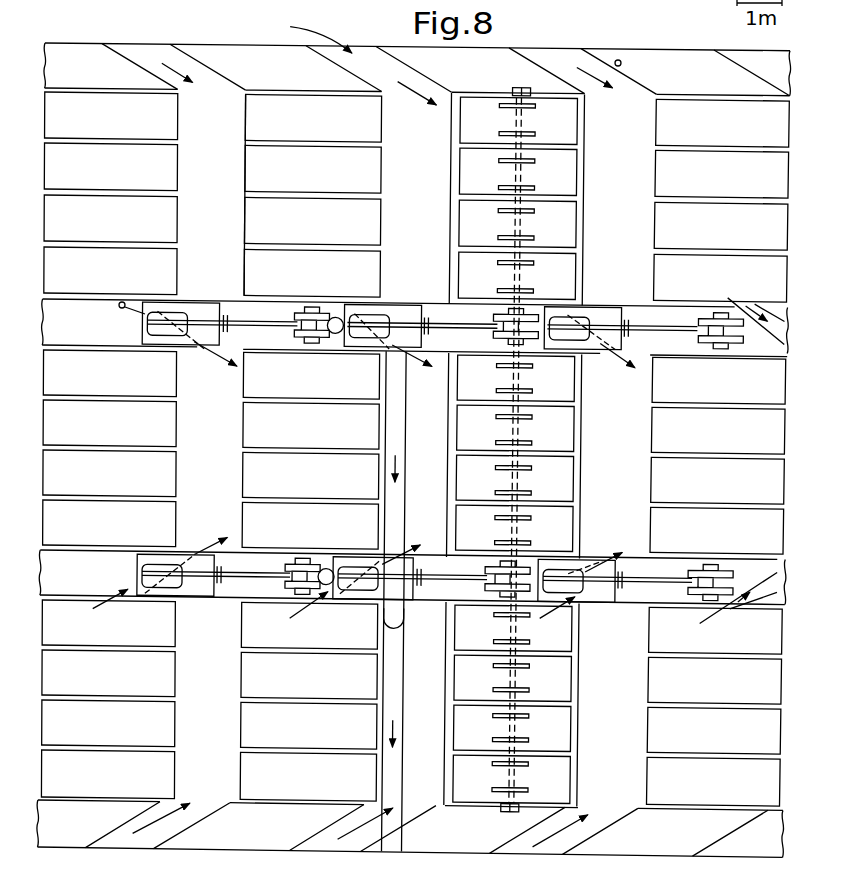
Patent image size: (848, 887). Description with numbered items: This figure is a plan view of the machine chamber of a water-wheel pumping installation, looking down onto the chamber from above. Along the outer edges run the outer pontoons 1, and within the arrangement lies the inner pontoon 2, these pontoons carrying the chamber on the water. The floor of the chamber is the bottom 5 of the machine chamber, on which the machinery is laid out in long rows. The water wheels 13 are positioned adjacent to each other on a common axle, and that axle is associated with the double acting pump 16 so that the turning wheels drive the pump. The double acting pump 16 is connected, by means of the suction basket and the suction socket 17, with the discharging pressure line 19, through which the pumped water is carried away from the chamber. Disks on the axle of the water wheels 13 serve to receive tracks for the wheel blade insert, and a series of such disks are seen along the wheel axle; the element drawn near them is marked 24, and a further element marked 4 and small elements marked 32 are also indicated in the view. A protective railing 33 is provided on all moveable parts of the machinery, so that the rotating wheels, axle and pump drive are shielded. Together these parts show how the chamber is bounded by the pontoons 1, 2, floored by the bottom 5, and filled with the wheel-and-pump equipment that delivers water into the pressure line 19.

The outer pontoon 1 is at (233, 50).
The inner pontoon 2 is at (85, 557).
The transport line 4 is at (528, 48).
The bottom of the machine chamber 5 is at (218, 462).
The water wheel 13 is at (570, 235).
The double acting pump 16 is at (370, 312).
The suction socket 17 is at (330, 335).
The discharging pressure line 19 is at (398, 400).
The disc 24 is at (528, 614).
The switch 32 is at (622, 60).
The protective railing 33 is at (242, 182).